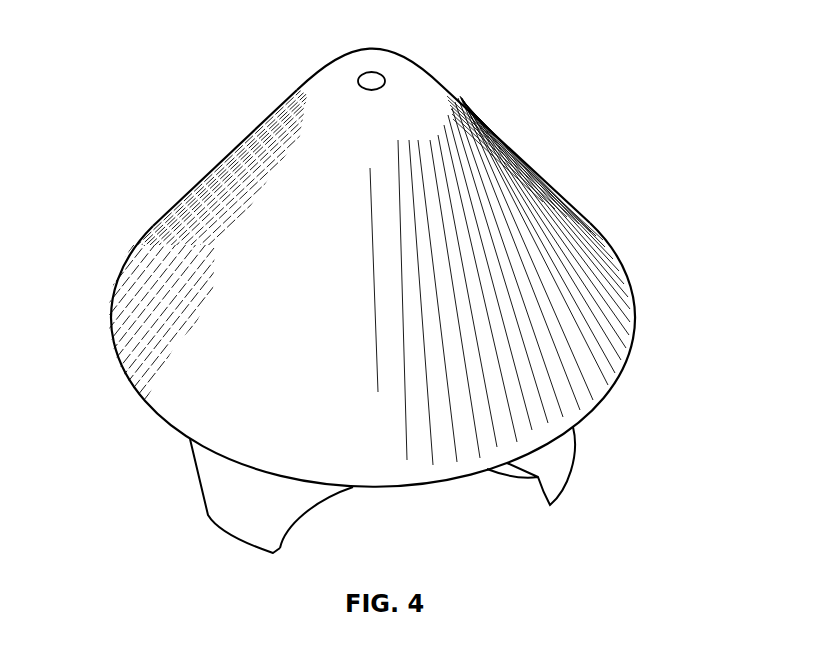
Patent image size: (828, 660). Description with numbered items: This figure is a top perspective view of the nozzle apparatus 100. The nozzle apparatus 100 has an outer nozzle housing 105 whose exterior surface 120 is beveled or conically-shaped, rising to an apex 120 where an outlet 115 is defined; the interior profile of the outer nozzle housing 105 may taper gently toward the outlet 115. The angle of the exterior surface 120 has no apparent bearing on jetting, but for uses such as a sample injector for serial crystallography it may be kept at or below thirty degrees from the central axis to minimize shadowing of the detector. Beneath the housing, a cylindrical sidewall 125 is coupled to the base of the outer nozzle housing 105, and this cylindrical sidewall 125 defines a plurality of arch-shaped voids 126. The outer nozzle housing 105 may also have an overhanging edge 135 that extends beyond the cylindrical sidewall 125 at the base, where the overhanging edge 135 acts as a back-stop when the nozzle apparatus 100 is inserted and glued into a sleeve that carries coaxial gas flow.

The nozzle apparatus 100 is at (155, 137).
The outer nozzle housing 105 is at (227, 243).
The outlet 115 is at (360, 72).
The exterior surface 120 is at (263, 122).
The cylindrical sidewall 125 is at (231, 518).
The arch-shaped voids 126 is at (320, 500).
The overhanging edge 135 is at (153, 410).